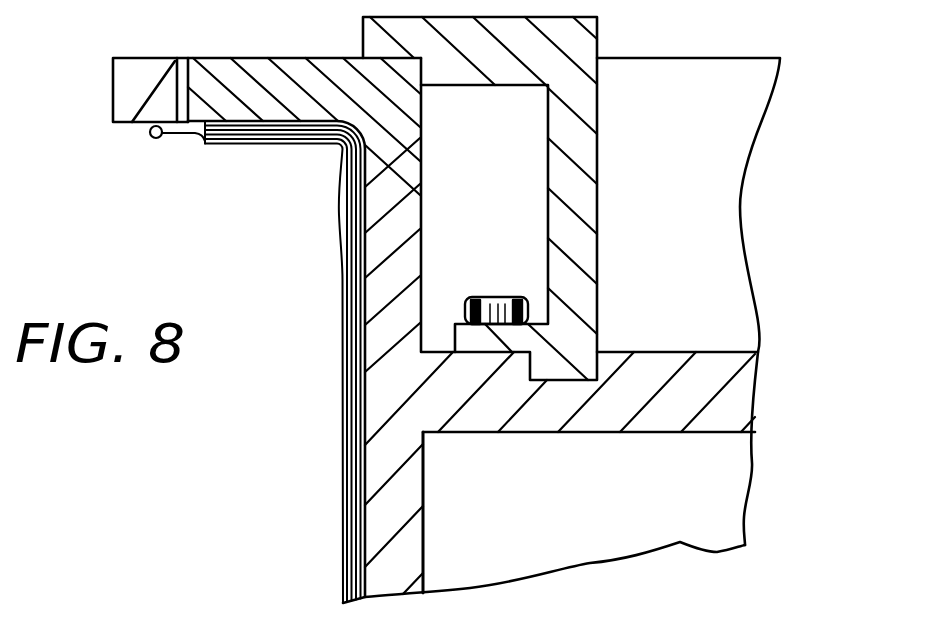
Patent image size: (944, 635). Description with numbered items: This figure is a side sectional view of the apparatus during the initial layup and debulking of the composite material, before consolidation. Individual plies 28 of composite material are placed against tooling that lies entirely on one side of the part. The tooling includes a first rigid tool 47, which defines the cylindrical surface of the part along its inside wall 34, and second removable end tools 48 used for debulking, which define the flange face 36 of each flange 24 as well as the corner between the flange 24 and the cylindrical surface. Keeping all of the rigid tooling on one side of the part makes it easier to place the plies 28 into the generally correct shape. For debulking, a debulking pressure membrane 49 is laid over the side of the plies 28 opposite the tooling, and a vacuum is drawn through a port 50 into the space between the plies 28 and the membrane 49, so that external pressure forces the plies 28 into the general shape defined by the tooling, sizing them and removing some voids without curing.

The flange 24 is at (226, 134).
The plies 28 is at (355, 553).
The inside wall 34 is at (367, 471).
The flange face 36 is at (300, 121).
The first rigid tool 47 is at (405, 512).
The second removable end tools 48 is at (268, 100).
The debulking pressure membrane 49 is at (170, 140).
The port 50 is at (171, 66).